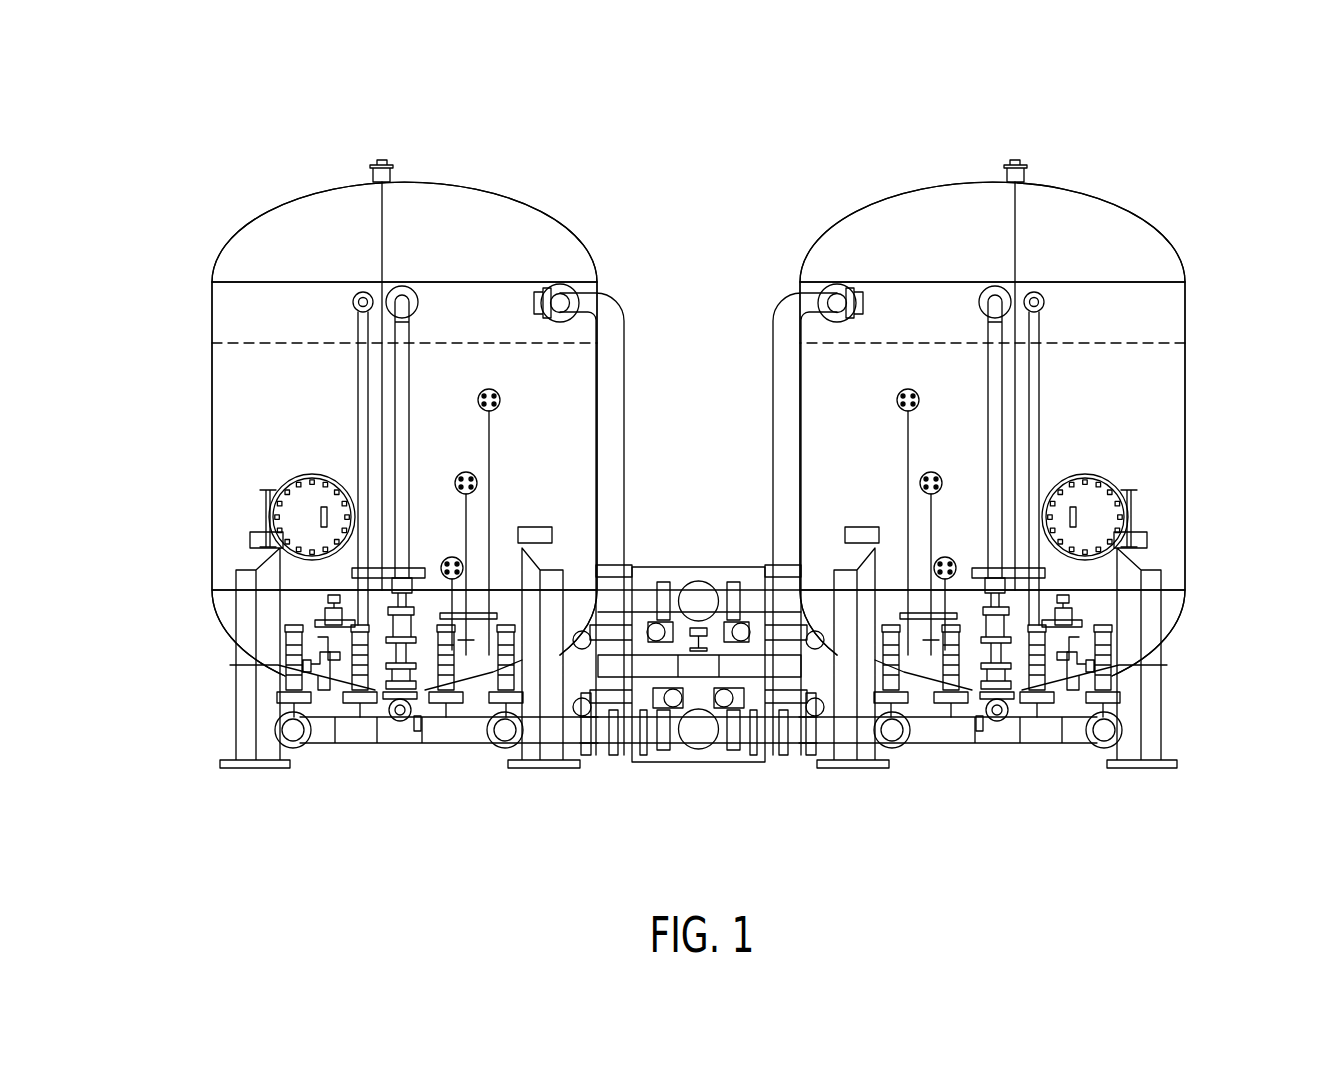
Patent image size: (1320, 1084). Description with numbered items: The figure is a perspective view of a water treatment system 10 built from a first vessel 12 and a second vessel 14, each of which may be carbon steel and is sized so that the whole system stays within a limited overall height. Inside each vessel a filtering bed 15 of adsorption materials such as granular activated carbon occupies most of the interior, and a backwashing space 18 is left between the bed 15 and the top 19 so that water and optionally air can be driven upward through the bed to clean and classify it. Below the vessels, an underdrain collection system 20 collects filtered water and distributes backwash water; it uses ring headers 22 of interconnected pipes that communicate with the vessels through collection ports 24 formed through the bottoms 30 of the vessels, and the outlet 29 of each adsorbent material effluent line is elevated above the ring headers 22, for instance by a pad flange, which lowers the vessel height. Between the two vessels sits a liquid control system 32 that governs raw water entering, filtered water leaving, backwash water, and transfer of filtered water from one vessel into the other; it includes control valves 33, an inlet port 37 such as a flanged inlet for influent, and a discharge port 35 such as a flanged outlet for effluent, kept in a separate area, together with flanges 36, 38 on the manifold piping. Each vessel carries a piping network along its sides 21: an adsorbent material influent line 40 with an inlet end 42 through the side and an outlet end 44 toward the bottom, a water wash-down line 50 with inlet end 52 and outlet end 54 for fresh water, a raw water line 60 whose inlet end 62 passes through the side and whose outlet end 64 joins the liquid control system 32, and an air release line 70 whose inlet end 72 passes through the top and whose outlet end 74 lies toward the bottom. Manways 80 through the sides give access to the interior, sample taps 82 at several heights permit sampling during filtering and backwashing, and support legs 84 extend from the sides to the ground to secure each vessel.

The water treatment system 10 is at (702, 448).
The first vessel 12 is at (203, 302).
The second vessel 14 is at (1198, 372).
The filtering bed 15 is at (227, 373).
The backwashing space 18 is at (440, 207).
The top 19 is at (518, 202).
The underdrain collection system 20 is at (423, 754).
The sides 21 is at (210, 430).
The ring headers 22 is at (345, 740).
The collection ports 24 is at (283, 705).
The outlet 29 is at (398, 722).
The bottom 30 is at (298, 690).
The liquid control system 32 is at (698, 643).
The control valves 33 is at (743, 584).
The discharge port 35 is at (690, 762).
The left outlet flange 36 is at (630, 764).
The inlet port 37 is at (690, 583).
The right outlet flange 38 is at (783, 764).
The adsorbent material influent line 40 is at (408, 348).
The inlet end 42 is at (399, 290).
The outlet end 44 is at (413, 670).
The water wash-down line 50 is at (357, 330).
The inlet end 52 is at (361, 294).
The outlet end 54 is at (282, 762).
The raw water line 60 is at (612, 306).
The inlet end 62 is at (562, 289).
The outlet end 64 is at (626, 565).
The air release line 70 is at (378, 185).
The inlet end 72 is at (381, 160).
The outlet end 74 is at (385, 703).
The manways 80 is at (300, 518).
The sample taps 82 is at (500, 400).
The support legs 84 is at (243, 583).